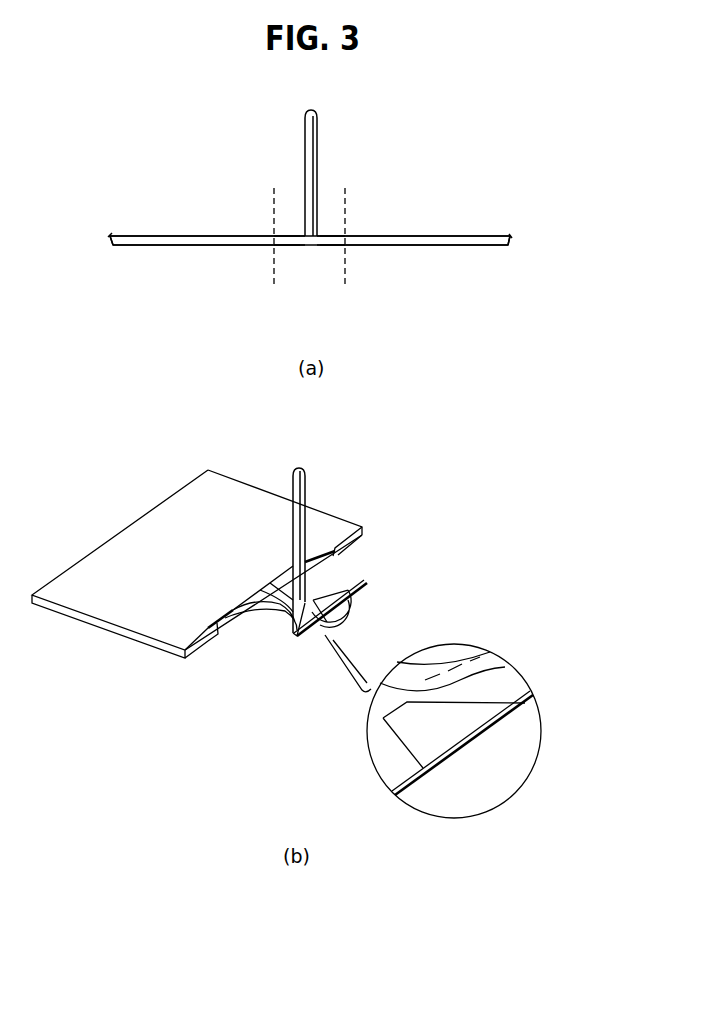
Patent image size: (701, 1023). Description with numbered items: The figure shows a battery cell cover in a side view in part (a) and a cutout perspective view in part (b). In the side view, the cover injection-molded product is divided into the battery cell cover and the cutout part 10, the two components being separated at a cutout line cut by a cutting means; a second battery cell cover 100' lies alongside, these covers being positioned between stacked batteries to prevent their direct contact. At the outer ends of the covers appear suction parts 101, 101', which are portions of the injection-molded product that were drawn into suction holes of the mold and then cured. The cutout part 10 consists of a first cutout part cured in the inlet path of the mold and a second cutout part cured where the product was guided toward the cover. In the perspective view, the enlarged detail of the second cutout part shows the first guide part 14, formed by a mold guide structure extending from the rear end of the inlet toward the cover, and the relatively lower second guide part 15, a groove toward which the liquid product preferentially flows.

The cutout part 10 is at (285, 171).
The first guide part 14 is at (533, 695).
The second guide part 15 is at (473, 743).
The suction part 101 is at (87, 215).
The battery cell cover 100' is at (415, 212).
The suction part 101' is at (539, 215).